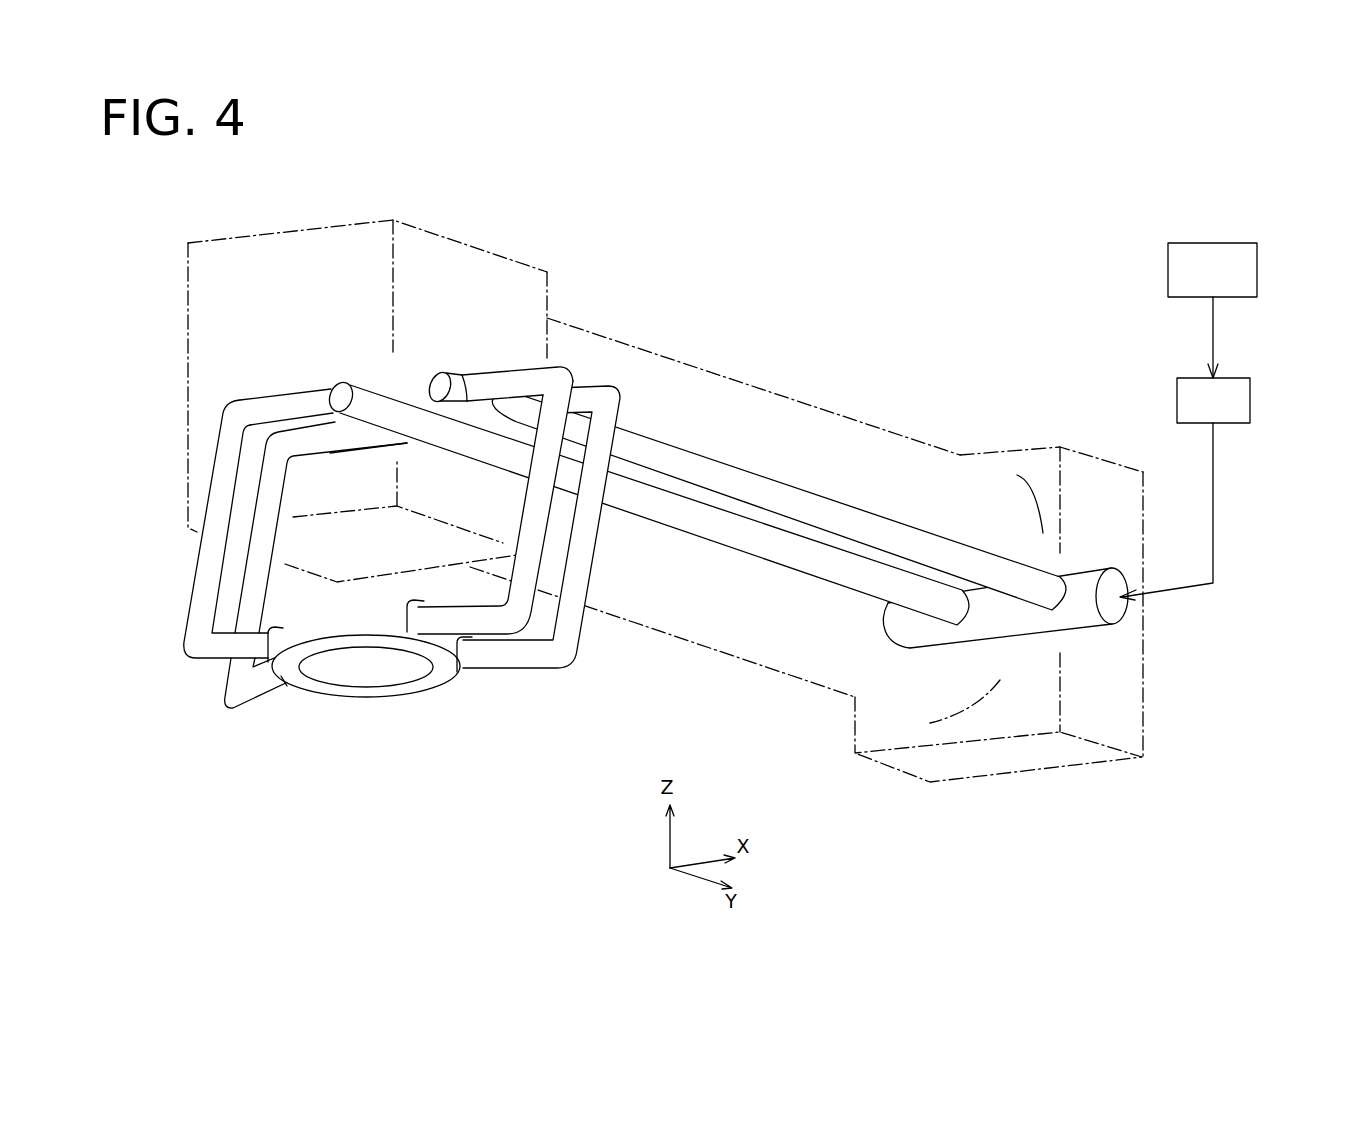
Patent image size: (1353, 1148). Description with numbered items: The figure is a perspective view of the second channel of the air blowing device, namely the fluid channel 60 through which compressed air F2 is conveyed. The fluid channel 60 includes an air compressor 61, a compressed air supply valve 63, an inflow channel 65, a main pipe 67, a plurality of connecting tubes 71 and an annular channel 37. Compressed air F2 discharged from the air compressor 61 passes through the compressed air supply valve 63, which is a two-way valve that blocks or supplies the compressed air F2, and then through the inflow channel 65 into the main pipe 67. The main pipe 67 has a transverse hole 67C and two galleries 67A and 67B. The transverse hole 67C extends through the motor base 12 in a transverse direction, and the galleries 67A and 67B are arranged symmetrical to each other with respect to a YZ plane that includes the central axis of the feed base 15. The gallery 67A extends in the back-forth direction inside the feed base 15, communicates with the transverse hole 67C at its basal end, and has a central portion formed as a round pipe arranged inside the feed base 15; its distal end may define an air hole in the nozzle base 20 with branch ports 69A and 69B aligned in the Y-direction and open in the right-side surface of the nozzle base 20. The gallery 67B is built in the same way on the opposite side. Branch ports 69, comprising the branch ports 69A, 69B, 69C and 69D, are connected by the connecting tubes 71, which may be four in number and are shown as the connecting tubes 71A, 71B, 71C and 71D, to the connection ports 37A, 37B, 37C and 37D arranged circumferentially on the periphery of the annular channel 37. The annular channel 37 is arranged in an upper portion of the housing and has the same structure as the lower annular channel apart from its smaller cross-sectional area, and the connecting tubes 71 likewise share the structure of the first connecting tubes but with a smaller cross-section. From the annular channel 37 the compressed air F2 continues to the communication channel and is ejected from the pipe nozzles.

The nozzle base 20 is at (476, 247).
The feed base 15 is at (863, 421).
The motor base 12 is at (1033, 448).
The annular channel 37 is at (371, 667).
The connection port 37A is at (470, 672).
The connection port 37B is at (408, 604).
The connection port 37C is at (287, 682).
The connection port 37D is at (270, 628).
The fluid channel 60 is at (774, 470).
The air compressor 61 is at (1235, 243).
The compressed air supply valve 63 is at (1235, 378).
The inflow channel 65 is at (1213, 485).
The main pipe 67 is at (790, 528).
The gallery 67A is at (923, 532).
The gallery 67B is at (747, 557).
The transverse hole 67C is at (1097, 627).
The branch port 69 is at (406, 409).
The branch port 69A is at (496, 372).
The branch port 69B is at (438, 373).
The branch port 69C is at (410, 443).
The branch port 69D is at (329, 389).
The connecting tube 71 is at (387, 550).
The connecting tube 71A is at (580, 640).
The connecting tube 71B is at (503, 636).
The connecting tube 71C is at (274, 547).
The connecting tube 71D is at (190, 588).
The compressed air F2 is at (1198, 337).